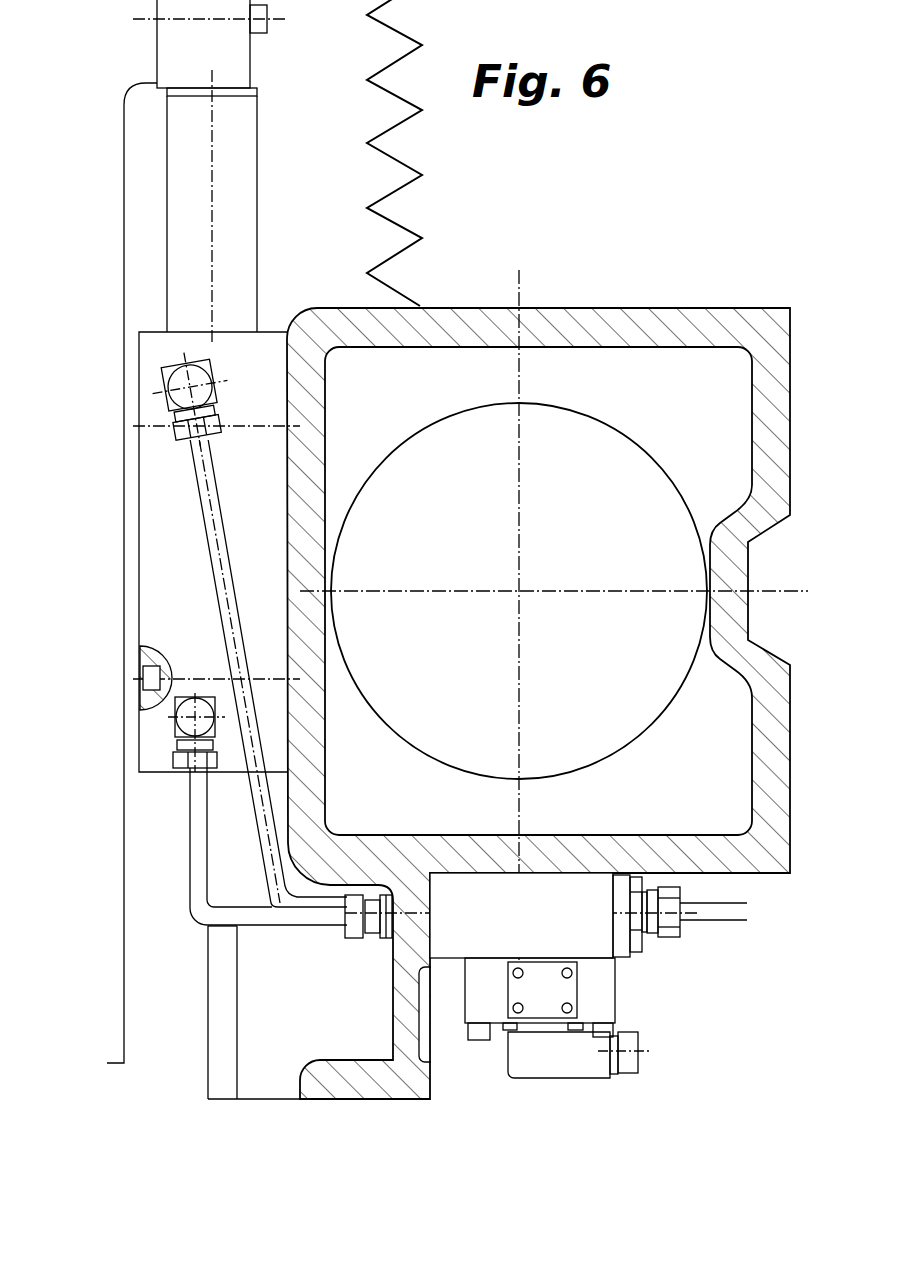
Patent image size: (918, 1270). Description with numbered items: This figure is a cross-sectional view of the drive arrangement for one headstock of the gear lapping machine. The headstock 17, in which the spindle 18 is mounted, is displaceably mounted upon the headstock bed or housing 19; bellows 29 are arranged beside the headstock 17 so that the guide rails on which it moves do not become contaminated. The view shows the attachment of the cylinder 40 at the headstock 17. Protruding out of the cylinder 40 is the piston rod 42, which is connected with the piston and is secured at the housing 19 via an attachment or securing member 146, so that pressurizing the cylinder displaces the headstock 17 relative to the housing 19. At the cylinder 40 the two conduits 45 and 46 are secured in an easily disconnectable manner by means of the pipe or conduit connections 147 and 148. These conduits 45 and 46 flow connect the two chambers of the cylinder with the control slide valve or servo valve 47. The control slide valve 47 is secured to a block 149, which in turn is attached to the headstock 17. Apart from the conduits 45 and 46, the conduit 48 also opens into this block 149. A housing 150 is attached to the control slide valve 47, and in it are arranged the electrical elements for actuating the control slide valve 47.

The headstock 17 is at (652, 328).
The spindle 18 is at (524, 402).
The headstock bed or housing 19 is at (145, 84).
The bellows 29 is at (388, 218).
The cylinder 40 is at (252, 455).
The piston rod 42 is at (235, 156).
The conduit 45 is at (190, 853).
The conduit 46 is at (207, 513).
The control slide valve 47 is at (598, 989).
The conduit 48 is at (730, 908).
The attachment or securing member 146 is at (232, 50).
The pipe or conduit connection 147 is at (197, 392).
The pipe or conduit connection 148 is at (197, 743).
The block 149 is at (548, 945).
The housing 150 is at (550, 1060).